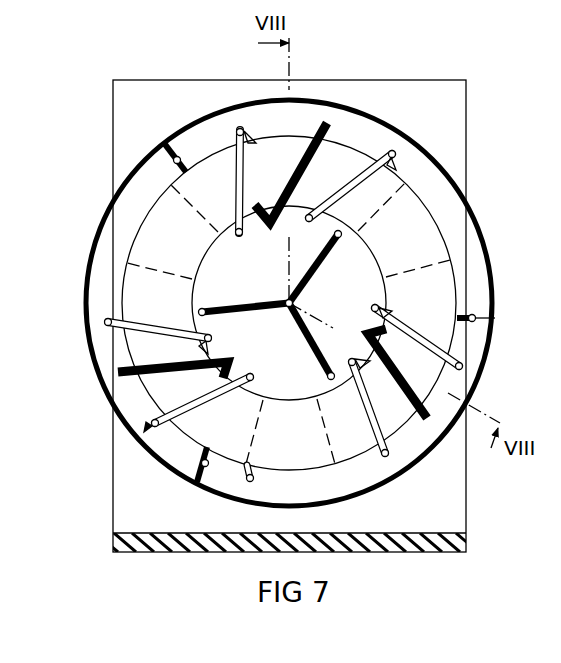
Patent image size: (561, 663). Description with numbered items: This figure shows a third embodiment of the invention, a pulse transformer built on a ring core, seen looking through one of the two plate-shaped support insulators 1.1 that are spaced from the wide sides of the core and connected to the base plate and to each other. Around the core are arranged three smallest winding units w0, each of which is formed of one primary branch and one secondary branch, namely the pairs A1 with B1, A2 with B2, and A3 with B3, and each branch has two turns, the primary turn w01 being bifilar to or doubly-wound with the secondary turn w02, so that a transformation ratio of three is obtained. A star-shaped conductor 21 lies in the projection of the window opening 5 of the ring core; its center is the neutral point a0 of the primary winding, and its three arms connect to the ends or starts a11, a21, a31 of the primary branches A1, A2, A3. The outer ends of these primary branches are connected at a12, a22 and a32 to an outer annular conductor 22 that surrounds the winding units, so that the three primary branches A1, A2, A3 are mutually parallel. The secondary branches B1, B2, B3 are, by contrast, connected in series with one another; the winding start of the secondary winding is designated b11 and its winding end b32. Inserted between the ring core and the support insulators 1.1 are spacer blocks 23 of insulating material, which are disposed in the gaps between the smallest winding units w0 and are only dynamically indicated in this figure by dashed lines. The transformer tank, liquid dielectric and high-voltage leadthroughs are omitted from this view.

The support insulator 1.1 is at (437, 80).
The outer annular conductor 22 is at (478, 206).
The smallest winding unit w0 is at (349, 101).
The spacer block 23 is at (158, 270).
The window opening 5 is at (275, 270).
The star-shaped conductor 21 is at (302, 289).
The turn of secondary branch w02 is at (121, 367).
The turn of primary winding w01 is at (102, 326).
The primary branch A1 is at (467, 365).
The primary branch A2 is at (240, 126).
The primary branch A3 is at (149, 428).
The secondary branch B1 is at (410, 326).
The secondary branch B2 is at (397, 152).
The secondary branch B3 is at (99, 315).
The neutral point of the primary winding a0 is at (287, 307).
The end or start of primary branch A1 a11 is at (328, 378).
The end or start of primary branch A2 a21 is at (339, 239).
The end or start of primary branch A3 a31 is at (203, 308).
The end of primary branch A1 a12 is at (495, 318).
The end of primary branch A2 a22 is at (176, 156).
The end of primary branch A3 a32 is at (202, 470).
The winding start of the secondary winding b11 is at (389, 457).
The winding end of the secondary winding b32 is at (249, 483).